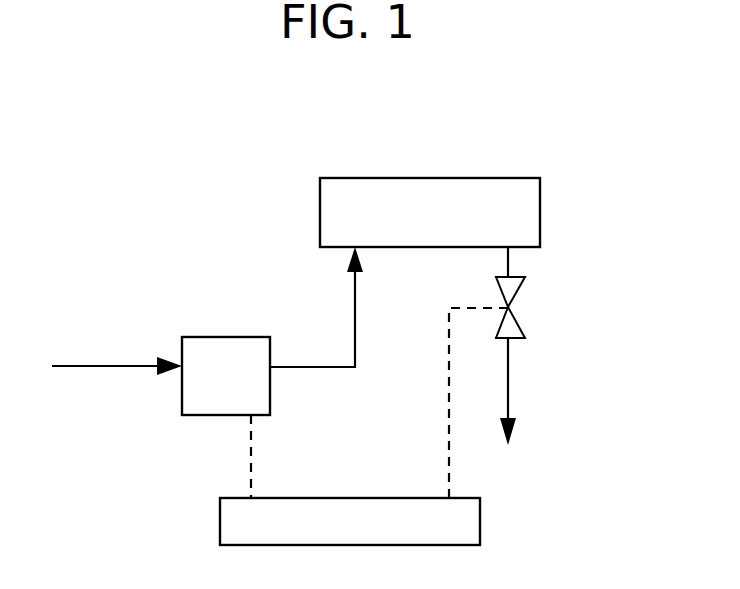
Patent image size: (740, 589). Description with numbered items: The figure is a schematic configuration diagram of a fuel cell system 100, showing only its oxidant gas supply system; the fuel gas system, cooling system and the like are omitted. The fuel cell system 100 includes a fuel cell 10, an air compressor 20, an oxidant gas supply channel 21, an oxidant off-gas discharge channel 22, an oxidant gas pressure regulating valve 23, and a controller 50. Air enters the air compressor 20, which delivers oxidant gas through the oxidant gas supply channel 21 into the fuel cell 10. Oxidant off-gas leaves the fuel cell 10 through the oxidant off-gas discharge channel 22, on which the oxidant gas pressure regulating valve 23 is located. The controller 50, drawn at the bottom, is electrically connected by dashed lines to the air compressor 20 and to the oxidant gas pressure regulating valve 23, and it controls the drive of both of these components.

The fuel cell system 100 is at (553, 143).
The fuel cell 10 is at (320, 210).
The air compressor 20 is at (204, 339).
The oxidant gas supply channel 21 is at (353, 296).
The oxidant off-gas discharge channel 22 is at (510, 381).
The oxidant gas pressure regulating valve 23 is at (518, 292).
The controller 50 is at (480, 518).